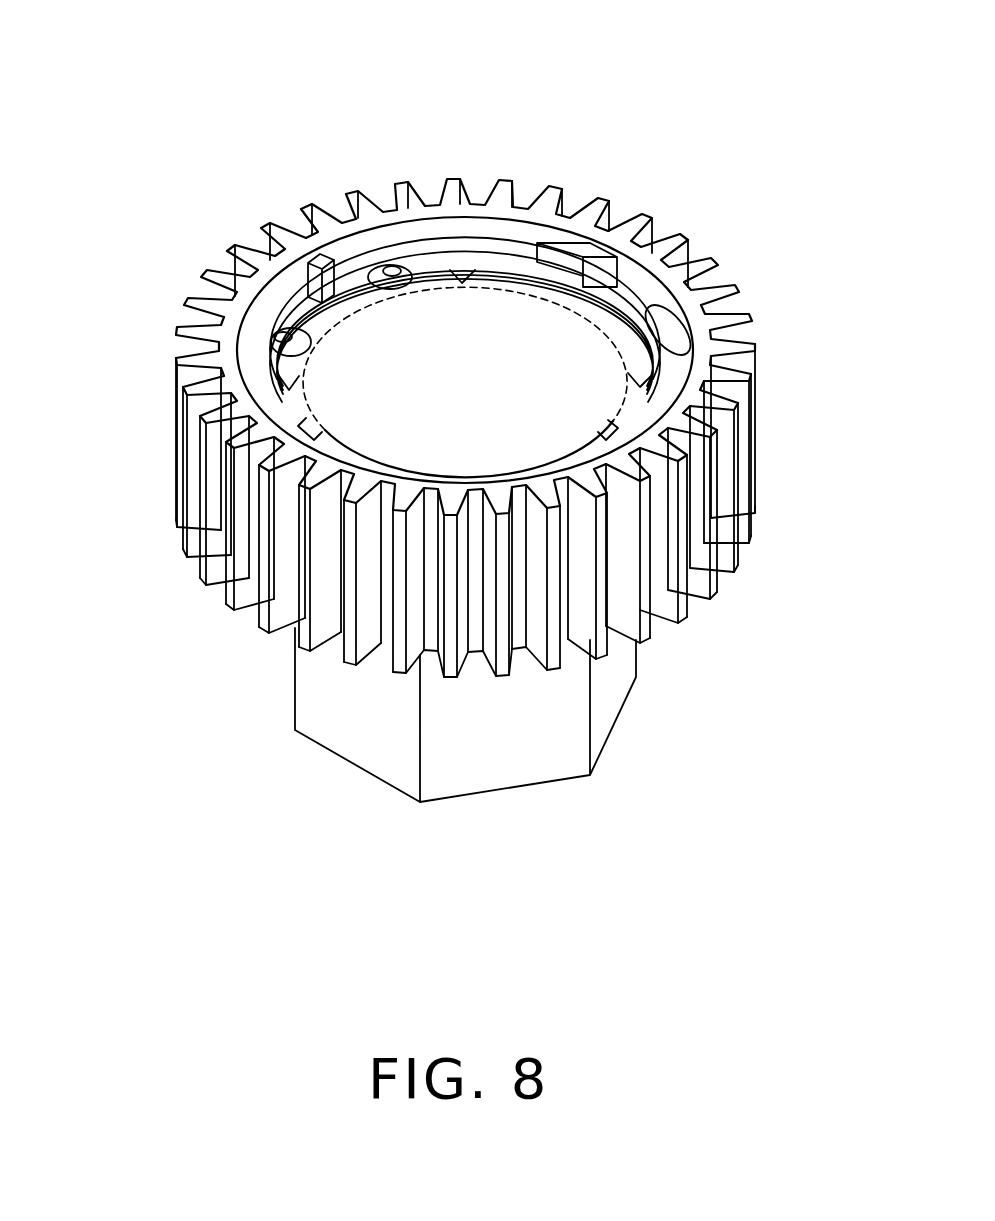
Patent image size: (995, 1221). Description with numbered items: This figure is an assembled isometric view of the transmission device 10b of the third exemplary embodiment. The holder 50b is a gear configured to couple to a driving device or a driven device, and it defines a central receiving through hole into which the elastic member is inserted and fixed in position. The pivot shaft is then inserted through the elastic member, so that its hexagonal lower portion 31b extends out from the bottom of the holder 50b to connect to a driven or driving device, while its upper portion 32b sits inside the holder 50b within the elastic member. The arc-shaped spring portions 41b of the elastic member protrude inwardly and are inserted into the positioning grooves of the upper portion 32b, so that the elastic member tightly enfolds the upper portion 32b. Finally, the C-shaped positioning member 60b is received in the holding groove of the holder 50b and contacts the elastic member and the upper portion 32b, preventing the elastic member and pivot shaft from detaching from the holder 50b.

The transmission device 10b is at (356, 76).
The lower portion 31b is at (497, 747).
The upper portion 32b is at (368, 390).
The spring portions 41b is at (470, 270).
The holder 50b is at (703, 543).
The positioning member 60b is at (463, 245).